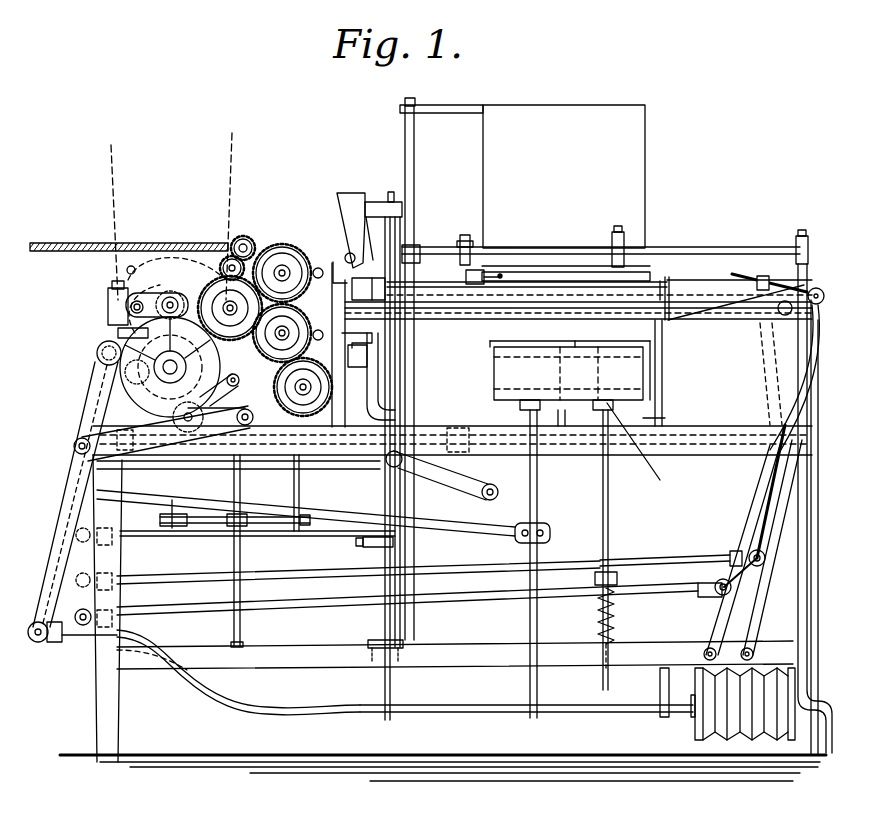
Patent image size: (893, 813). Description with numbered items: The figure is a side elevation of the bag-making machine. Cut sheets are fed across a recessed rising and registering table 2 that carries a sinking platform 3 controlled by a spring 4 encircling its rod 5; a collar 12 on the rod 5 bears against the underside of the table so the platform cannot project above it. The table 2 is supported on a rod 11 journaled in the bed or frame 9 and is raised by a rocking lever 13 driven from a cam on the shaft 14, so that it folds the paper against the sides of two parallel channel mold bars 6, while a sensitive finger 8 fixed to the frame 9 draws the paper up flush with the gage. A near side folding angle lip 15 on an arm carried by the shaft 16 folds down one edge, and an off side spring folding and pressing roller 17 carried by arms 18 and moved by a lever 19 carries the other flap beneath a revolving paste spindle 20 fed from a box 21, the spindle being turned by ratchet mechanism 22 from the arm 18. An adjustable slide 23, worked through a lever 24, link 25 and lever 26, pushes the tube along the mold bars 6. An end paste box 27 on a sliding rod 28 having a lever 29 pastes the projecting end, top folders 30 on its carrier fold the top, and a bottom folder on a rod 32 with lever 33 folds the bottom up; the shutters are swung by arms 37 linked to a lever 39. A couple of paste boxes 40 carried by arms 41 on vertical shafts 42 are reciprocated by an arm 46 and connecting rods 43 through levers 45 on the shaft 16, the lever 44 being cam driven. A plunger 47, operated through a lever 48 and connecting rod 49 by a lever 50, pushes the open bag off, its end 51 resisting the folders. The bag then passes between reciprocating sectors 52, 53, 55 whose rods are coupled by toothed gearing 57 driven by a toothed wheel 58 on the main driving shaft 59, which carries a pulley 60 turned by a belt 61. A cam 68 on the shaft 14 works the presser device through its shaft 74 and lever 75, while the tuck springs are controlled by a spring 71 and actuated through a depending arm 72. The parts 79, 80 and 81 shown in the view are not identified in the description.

The rising and registering table 2 is at (642, 382).
The sinking platform 3 is at (622, 348).
The spring 4 is at (614, 604).
The platform rod 5 is at (608, 496).
The channel mold bars 6 is at (455, 284).
The sensitive finger 8 is at (577, 336).
The bed or frame 9 is at (720, 426).
The rod 11 is at (539, 505).
The collar 12 is at (644, 450).
The rocking lever 13 is at (470, 523).
The shaft 14 is at (97, 357).
The near side folding angle lip 15 is at (580, 280).
The shaft 16 is at (427, 437).
The off side spring folding and pressing roller 17 is at (628, 279).
The arms 18 is at (86, 248).
The lever 19 is at (453, 473).
The revolving paste spindle 20 is at (540, 252).
The paste box 21 is at (538, 135).
The ratchet mechanism 22 is at (470, 262).
The adjustable slide 23 is at (682, 282).
The lever 24 is at (774, 388).
The link 25 is at (314, 609).
The lever 26 is at (83, 598).
The end paste box 27 is at (347, 193).
The sliding rod 28 is at (428, 379).
The lever 29 is at (352, 478).
The top folders 30 is at (359, 222).
The rod 32 is at (385, 684).
The lever 33 is at (318, 480).
The arms 37 is at (360, 545).
The lever 39 is at (96, 489).
The paste boxes 40 is at (368, 353).
The arms 41 is at (362, 396).
The vertical shafts 42 is at (231, 554).
The connecting rods 43 is at (257, 518).
The lever 44 is at (182, 526).
The levers 45 is at (268, 528).
The arm 46 is at (268, 565).
The plunger 47 is at (760, 308).
The strap 48 is at (763, 501).
The connecting rod 49 is at (652, 560).
The lever 50 is at (60, 535).
The end 51 is at (413, 243).
The sector 52 is at (283, 240).
The sector 53 is at (333, 239).
The sector 55 is at (373, 340).
The toothed gearing 57 is at (290, 240).
The toothed wheel 58 is at (127, 270).
The main driving shaft 59 is at (173, 298).
The pulley 60 is at (148, 258).
The belt 61 is at (115, 215).
The cam 68 is at (138, 397).
The spring 71 is at (108, 297).
The depending arm 72 is at (118, 332).
The shaft 74 is at (90, 455).
The lever 75 is at (74, 448).
The cable 79 is at (575, 282).
The bellows 80 is at (712, 700).
The belt 81 is at (54, 560).